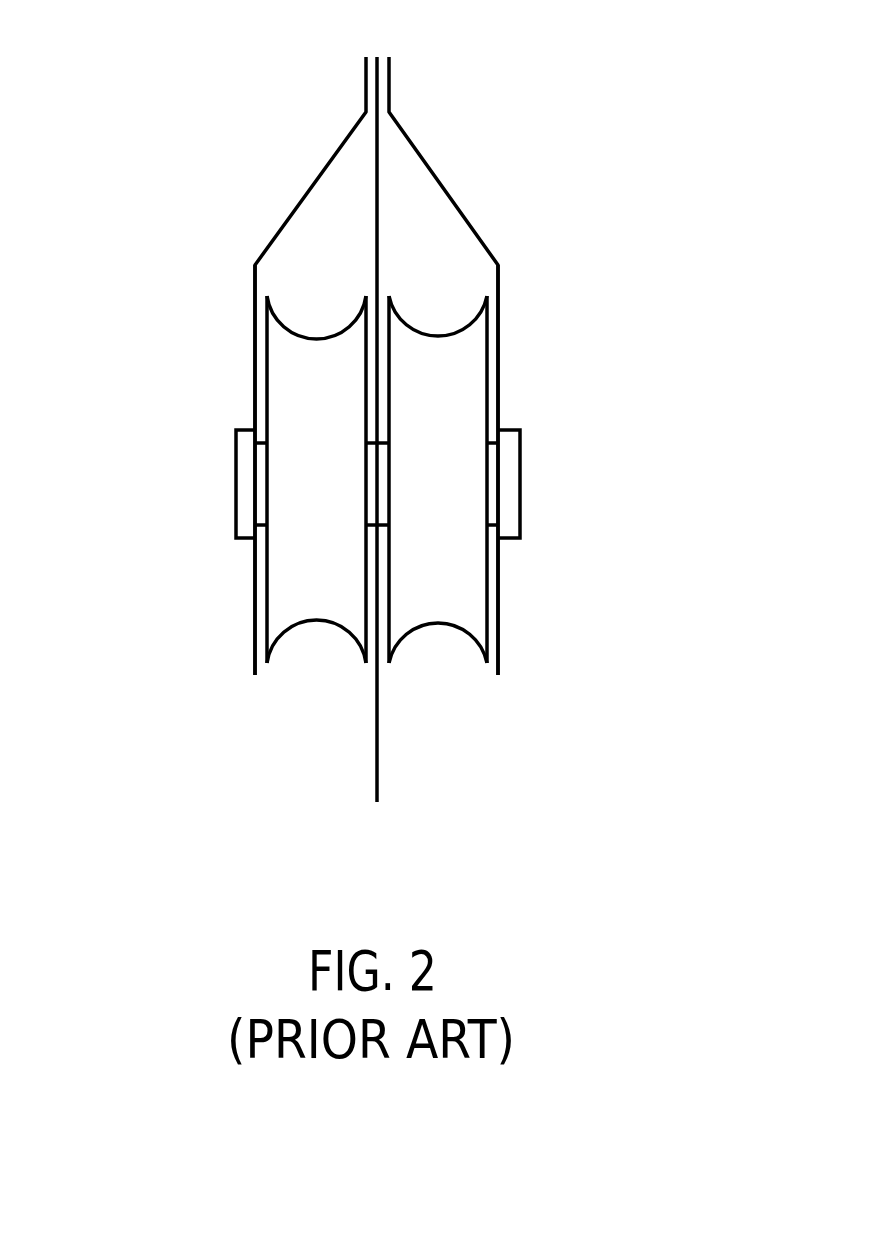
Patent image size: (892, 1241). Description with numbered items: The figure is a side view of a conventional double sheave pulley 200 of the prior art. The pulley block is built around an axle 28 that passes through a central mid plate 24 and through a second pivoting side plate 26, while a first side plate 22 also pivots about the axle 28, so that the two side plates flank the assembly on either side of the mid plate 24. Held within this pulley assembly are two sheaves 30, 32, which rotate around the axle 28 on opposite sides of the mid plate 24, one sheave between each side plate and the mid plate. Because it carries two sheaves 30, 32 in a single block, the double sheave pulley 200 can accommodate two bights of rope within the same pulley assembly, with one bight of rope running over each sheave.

The double sheave pulley 200 is at (457, 98).
The first side plate 22 is at (255, 309).
The mid plate 24 is at (377, 207).
The second pivoting side plate 26 is at (499, 293).
The axle 28 is at (236, 497).
The sheave 30 is at (297, 582).
The sheave 32 is at (468, 585).